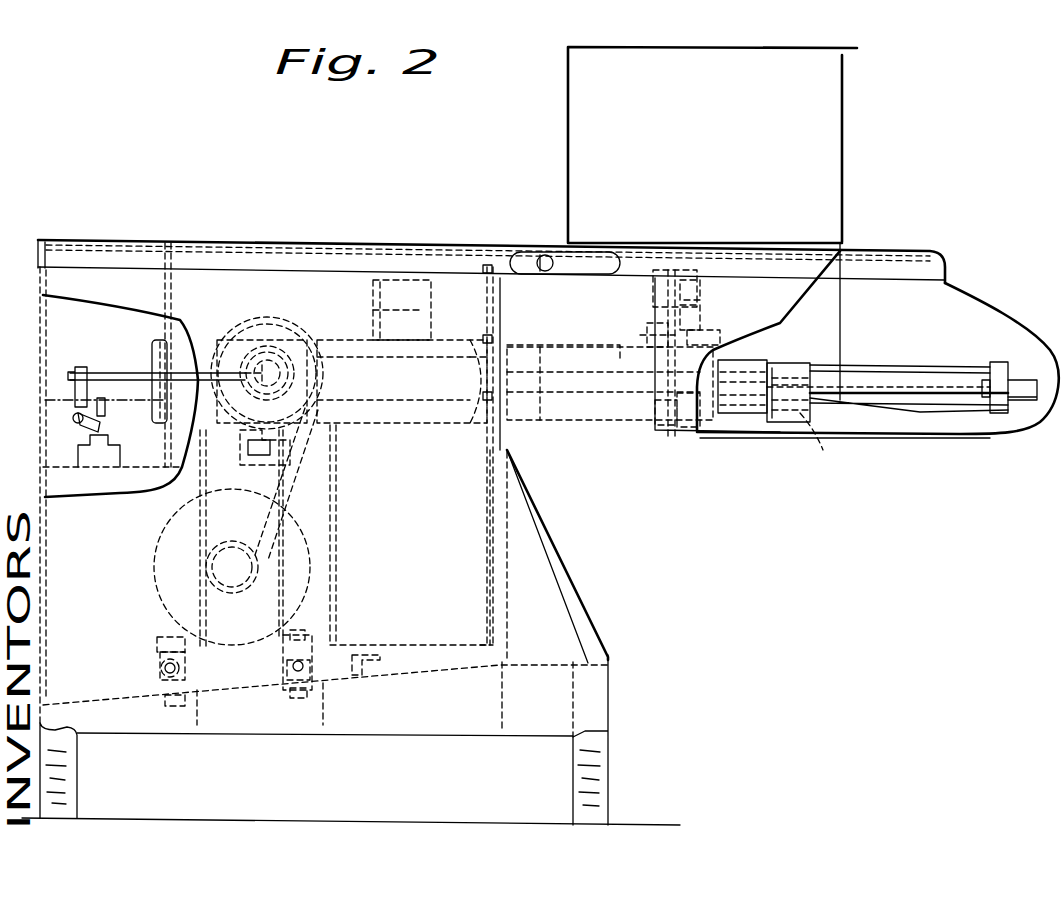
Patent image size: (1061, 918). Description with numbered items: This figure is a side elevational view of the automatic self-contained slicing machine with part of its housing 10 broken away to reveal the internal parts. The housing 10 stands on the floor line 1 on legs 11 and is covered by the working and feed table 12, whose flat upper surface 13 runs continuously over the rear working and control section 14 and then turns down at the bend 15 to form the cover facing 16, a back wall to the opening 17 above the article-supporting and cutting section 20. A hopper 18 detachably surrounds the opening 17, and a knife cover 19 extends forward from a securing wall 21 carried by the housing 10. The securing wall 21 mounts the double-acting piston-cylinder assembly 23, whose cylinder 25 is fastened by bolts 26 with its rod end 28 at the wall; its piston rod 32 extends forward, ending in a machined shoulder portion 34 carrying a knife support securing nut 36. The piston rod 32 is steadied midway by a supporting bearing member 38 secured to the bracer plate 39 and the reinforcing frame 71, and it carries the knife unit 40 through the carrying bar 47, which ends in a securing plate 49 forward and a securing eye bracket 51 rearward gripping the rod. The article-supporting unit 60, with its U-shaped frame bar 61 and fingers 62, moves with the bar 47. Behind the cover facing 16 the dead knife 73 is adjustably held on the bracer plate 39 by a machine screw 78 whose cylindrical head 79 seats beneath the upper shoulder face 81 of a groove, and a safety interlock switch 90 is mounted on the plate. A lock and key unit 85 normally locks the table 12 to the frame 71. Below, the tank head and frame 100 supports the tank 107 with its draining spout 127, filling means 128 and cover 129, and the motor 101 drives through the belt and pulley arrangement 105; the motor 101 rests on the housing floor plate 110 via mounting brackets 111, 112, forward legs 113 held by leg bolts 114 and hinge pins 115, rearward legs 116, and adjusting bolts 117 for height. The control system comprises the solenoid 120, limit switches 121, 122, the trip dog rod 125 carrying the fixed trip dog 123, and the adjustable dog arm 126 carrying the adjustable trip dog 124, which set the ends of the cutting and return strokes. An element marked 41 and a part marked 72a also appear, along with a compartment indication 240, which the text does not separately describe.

The floor line 1 is at (405, 824).
The housing 10 is at (563, 537).
The legs 11 is at (67, 790).
The working and feed table 12 is at (68, 252).
The upper surface 13 is at (172, 242).
The working and control section 14 is at (330, 293).
The bend 15 is at (695, 250).
The cover facing 16 is at (712, 290).
The opening 17 is at (795, 238).
The hopper 18 is at (568, 145).
The knife cover 19 is at (1000, 302).
The article-supporting and cutting section 20 is at (792, 440).
The securing wall 21 is at (490, 300).
The piston-cylinder assembly 23 is at (408, 390).
The cylinder 25 is at (374, 385).
The bolts 26 is at (483, 400).
The rod end 28 is at (472, 365).
The piston rod 32 is at (576, 385).
The machined shoulder portion 34 is at (985, 370).
The knife support securing nut 36 is at (1025, 382).
The supporting bearing member 38 is at (808, 402).
The bracer plate 39 is at (680, 430).
The knife unit 40 is at (955, 420).
The end plate 41 is at (982, 408).
The knife and article support carrying bar 47 is at (872, 366).
The securing plate 49 is at (1000, 368).
The securing eye bracket 51 is at (748, 403).
The article-supporting unit 60 is at (690, 432).
The U-shaped frame bar 61 is at (660, 408).
The fingers 62 is at (815, 442).
The reinforcing frame 71 is at (710, 326).
The conveyor 72a is at (578, 346).
The dead knife 73 is at (702, 312).
The machine screw 78 is at (680, 300).
The cylindrical head 79 is at (675, 290).
The upper shoulder face 81 is at (695, 286).
The lock and key unit 85 is at (572, 268).
The safety interlock switch 90 is at (650, 332).
The tank head and frame 100 is at (380, 352).
The motor 101 is at (172, 552).
The belt and pulley arrangement 105 is at (205, 480).
The tank 107 is at (355, 523).
The housing floor plate 110 is at (400, 683).
The mounting bracket 111 is at (295, 690).
The rearward mounting bracket 112 is at (165, 693).
The forward legs 113 is at (312, 646).
The leg bolts 114 is at (158, 640).
The hinge pins 115 is at (287, 666).
The rearward legs 116 is at (165, 653).
The adjusting bolts 117 is at (162, 670).
The solenoid 120 is at (155, 350).
The limit switch 121 is at (105, 447).
The limit switch 122 is at (265, 448).
The fixed trip dog 123 is at (78, 412).
The adjustable trip dog 124 is at (104, 404).
The trip dog rod 125 is at (95, 372).
The adjustable dog arm 126 is at (140, 410).
The tank draining spouts 127 is at (380, 660).
The tank filling means 128 is at (400, 312).
The cover 129 is at (400, 287).
The direction arrow 240 is at (77, 482).